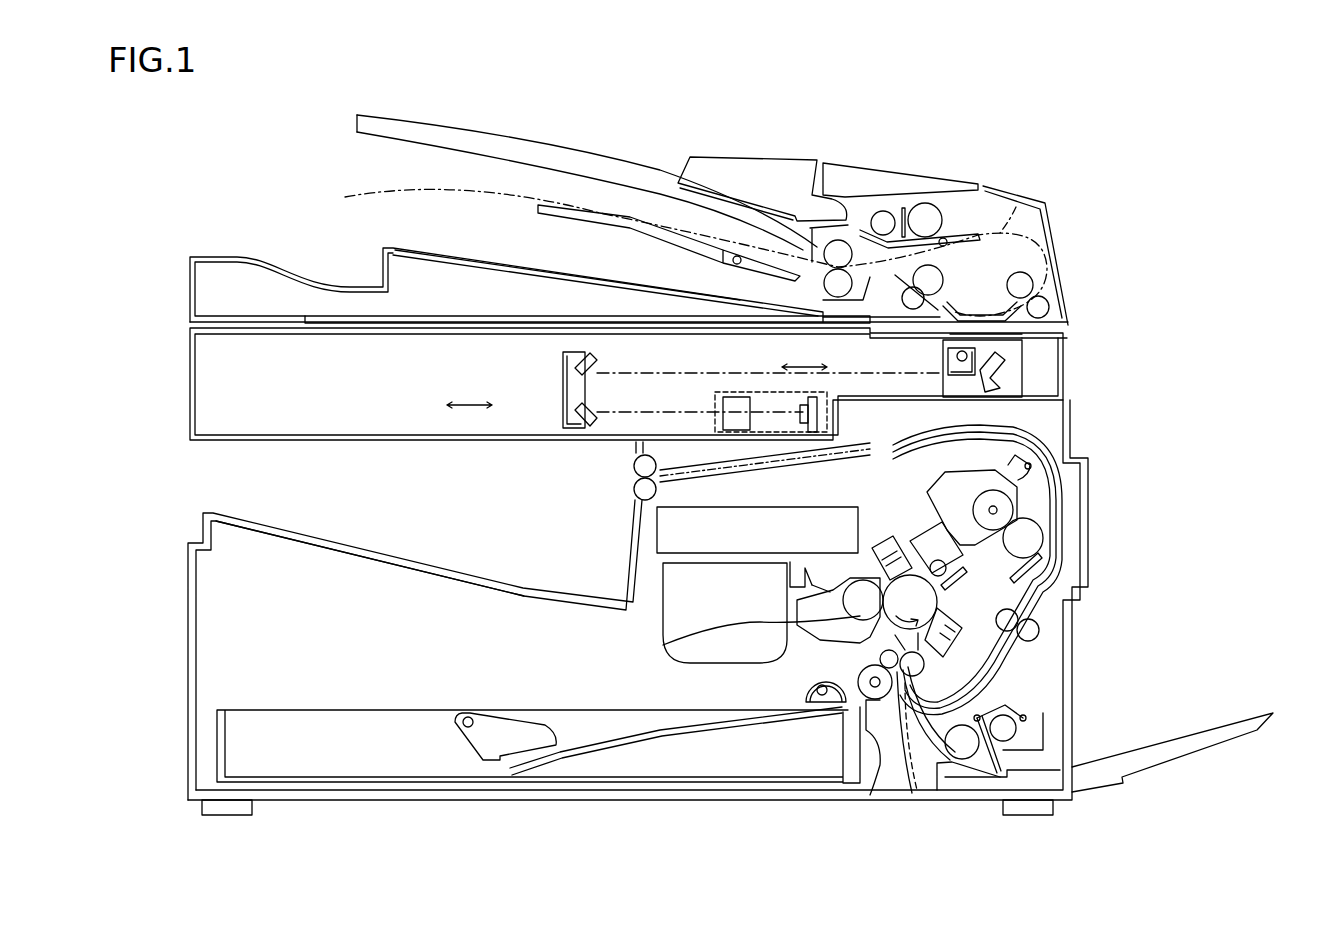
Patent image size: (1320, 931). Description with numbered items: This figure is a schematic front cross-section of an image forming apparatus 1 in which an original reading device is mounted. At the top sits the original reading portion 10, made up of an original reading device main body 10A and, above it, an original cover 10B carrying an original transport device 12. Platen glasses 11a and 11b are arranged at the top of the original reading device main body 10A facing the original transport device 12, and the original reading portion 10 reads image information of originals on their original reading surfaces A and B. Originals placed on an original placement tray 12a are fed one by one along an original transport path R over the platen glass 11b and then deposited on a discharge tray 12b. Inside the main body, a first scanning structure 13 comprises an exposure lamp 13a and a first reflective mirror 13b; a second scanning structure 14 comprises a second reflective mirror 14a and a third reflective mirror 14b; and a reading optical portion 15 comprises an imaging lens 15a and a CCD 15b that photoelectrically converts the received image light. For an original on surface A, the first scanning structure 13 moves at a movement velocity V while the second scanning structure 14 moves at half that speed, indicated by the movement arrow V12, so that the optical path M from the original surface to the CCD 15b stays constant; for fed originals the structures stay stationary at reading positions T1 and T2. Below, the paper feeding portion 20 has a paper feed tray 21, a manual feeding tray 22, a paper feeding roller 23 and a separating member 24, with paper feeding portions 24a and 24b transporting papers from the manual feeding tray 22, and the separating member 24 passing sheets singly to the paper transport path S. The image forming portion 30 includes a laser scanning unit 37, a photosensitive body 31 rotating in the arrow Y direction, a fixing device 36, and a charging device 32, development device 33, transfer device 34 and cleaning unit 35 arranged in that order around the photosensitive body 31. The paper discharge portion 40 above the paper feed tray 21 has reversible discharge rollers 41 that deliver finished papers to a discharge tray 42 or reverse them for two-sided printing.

The image forming apparatus 1 is at (704, 110).
The original reading portion 10 is at (1240, 285).
The original reading device main body 10A is at (1148, 332).
The original cover 10B is at (728, 254).
The platen glass 11a is at (333, 348).
The platen glass 11b is at (1068, 356).
The original transport device 12 is at (1095, 208).
The original placement tray 12a is at (578, 156).
The discharge tray 12b is at (568, 283).
The first scanning structure 13 is at (1068, 388).
The exposure lamp 13a is at (946, 355).
The first reflective mirror 13b is at (966, 384).
The second scanning structure 14 is at (562, 392).
The second reflective mirror 14a is at (598, 360).
The third reflective mirror 14b is at (598, 422).
The reading optical portion 15 is at (714, 395).
The imaging lens 15a is at (718, 420).
The CCD 15b is at (816, 412).
The paper feeding portion 20 is at (180, 710).
The paper feed tray 21 is at (340, 708).
The manual feeding tray 22 is at (1190, 766).
The paper feeding roller 23 is at (800, 690).
The separating member 24 is at (861, 707).
The paper feeding portion 24a is at (965, 742).
The paper feeding portion 24b is at (955, 770).
The image forming portion 30 is at (1145, 462).
The photosensitive body 31 is at (1018, 605).
The charging device 32 is at (890, 540).
The development device 33 is at (668, 637).
The transfer device 34 is at (950, 660).
The cleaning unit 35 is at (962, 583).
The fixing device 36 is at (1015, 537).
The laser scanning unit 37 is at (660, 528).
The paper discharge portion 40 is at (367, 473).
The discharge rollers 41 is at (632, 470).
The discharge tray 42 is at (374, 545).
The original reading surface A is at (381, 335).
The original reading surface B is at (1072, 330).
The optical path M is at (702, 372).
The original transport path R is at (1016, 207).
The paper transport path S is at (812, 462).
The reading position T1 is at (1066, 418).
The reading position T2 is at (563, 355).
The movement velocity V is at (804, 354).
The moving direction of carriage V12 is at (471, 420).
The arrow Y direction Y is at (910, 602).